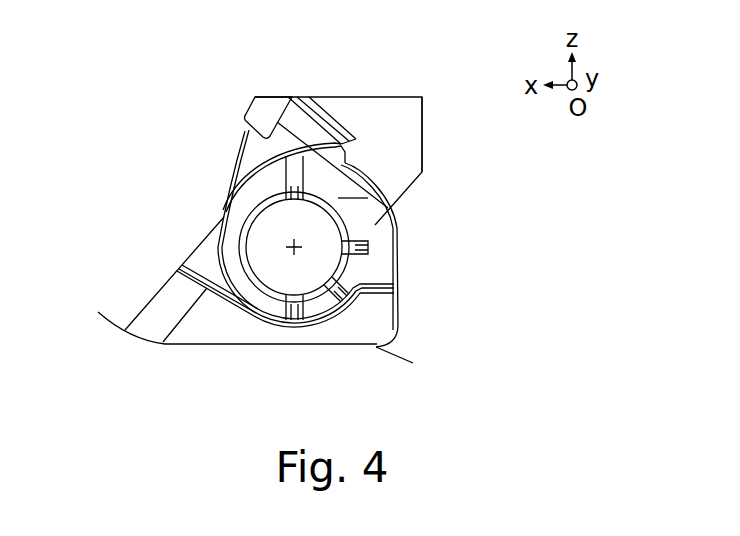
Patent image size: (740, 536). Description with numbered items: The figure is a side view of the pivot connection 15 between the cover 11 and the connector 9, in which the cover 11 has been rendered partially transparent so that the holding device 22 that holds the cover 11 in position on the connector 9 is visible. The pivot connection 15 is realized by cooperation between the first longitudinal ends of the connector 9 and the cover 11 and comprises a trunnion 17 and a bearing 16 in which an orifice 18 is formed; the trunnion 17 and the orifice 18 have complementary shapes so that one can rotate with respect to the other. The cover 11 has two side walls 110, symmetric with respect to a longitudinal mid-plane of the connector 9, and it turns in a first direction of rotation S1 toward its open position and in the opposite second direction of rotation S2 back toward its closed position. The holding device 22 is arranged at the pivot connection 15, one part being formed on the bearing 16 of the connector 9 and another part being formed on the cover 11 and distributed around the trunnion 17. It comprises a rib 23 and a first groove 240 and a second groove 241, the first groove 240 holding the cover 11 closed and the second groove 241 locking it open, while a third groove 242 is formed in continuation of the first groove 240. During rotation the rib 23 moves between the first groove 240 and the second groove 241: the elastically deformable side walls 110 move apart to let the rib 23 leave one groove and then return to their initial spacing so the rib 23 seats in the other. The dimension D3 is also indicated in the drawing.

The connector 9 is at (152, 317).
The cover 11 is at (247, 104).
The pivot connection 15 is at (443, 245).
The bearing 16 is at (385, 238).
The trunnion 17 is at (270, 256).
The orifice 18 is at (274, 228).
The holding device 22 is at (133, 189).
The rib 23 is at (353, 295).
The side wall 110 is at (390, 160).
The first groove 240 is at (297, 320).
The second groove 241 is at (357, 249).
The third groove 242 is at (295, 168).
The diameter D3 is at (365, 295).
The first direction of rotation S1 is at (320, 65).
The second direction of rotation S2 is at (320, 45).